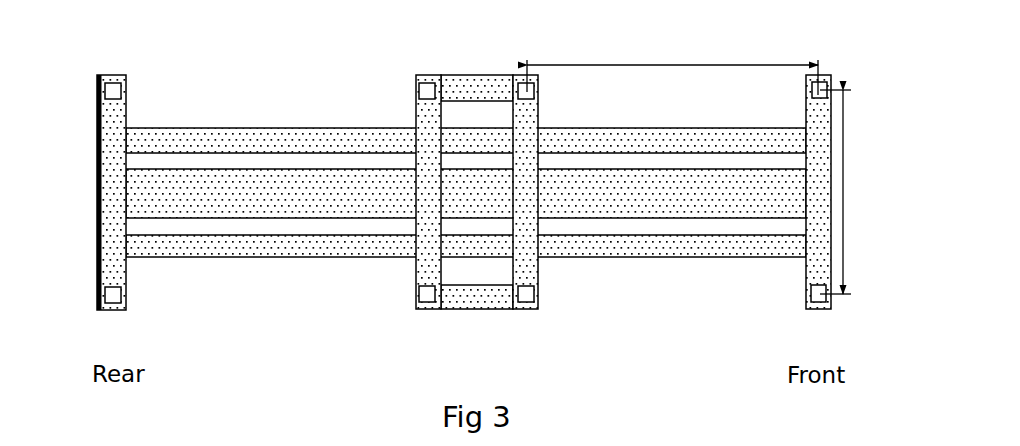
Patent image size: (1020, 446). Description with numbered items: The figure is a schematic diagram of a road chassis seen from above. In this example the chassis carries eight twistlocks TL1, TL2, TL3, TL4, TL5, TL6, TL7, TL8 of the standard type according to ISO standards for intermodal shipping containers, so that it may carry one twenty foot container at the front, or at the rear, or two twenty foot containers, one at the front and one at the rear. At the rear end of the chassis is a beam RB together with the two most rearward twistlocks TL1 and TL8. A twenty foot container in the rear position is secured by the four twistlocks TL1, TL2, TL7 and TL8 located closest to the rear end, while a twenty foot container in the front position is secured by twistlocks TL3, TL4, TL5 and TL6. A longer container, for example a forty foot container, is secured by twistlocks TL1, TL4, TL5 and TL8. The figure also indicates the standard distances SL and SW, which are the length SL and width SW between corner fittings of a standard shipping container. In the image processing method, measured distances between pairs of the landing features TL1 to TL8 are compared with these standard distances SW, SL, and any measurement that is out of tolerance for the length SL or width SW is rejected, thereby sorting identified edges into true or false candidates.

The beam RB is at (95, 182).
The twistlock TL1 is at (114, 91).
The twistlock TL2 is at (425, 92).
The twistlock TL3 is at (523, 92).
The twistlock TL4 is at (815, 90).
The twistlock TL5 is at (815, 297).
The twistlock TL6 is at (528, 297).
The twistlock TL7 is at (420, 295).
The twistlock TL8 is at (112, 296).
The standard length distance SL is at (672, 69).
The standard width distance SW is at (852, 192).